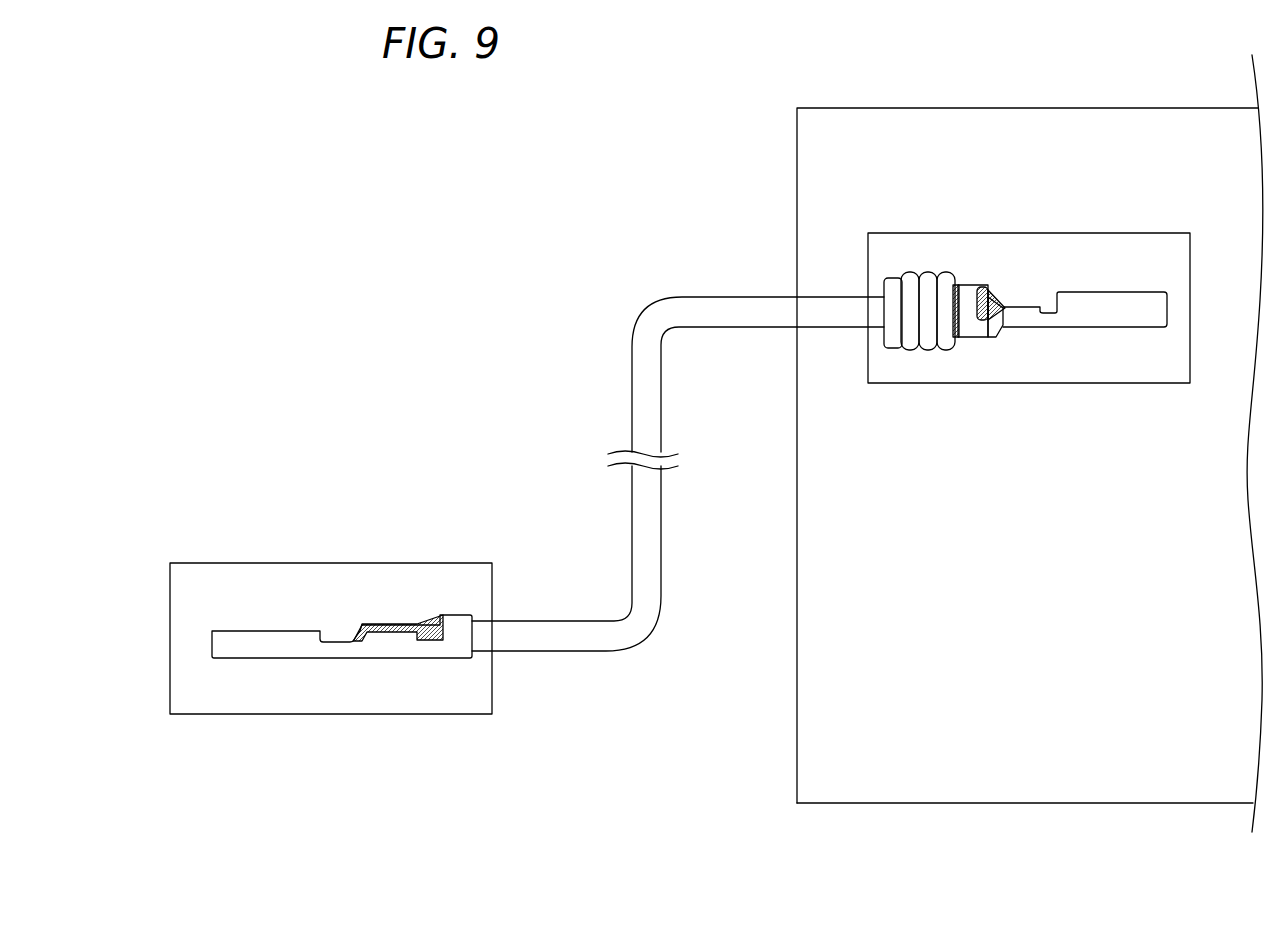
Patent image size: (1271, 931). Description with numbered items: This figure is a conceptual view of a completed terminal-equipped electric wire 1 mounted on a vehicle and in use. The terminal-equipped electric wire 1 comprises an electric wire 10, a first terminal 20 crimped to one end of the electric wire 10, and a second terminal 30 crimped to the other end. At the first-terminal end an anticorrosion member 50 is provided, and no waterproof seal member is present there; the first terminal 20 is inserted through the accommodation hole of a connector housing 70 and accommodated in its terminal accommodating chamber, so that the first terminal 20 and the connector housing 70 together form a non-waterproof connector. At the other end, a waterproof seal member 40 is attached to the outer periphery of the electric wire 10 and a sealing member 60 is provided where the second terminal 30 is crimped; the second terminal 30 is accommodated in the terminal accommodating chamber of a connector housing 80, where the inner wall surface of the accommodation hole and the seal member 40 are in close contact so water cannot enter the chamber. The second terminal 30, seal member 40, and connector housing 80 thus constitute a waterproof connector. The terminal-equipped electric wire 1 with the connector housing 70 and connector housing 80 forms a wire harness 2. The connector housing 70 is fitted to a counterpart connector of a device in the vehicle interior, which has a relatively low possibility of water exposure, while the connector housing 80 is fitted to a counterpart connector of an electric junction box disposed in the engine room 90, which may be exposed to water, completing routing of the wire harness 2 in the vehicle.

The terminal-equipped electric wire 1 is at (562, 512).
The wire harness 2 is at (660, 243).
The electric wire 10 is at (612, 358).
The first terminal 20 is at (278, 620).
The second terminal 30 is at (1118, 282).
The seal member 40 is at (926, 262).
The anticorrosion member 50 is at (382, 610).
The sealing member 60 is at (995, 287).
The connector housing 70 is at (315, 722).
The connector housing 80 is at (1107, 392).
The engine room 90 is at (932, 100).